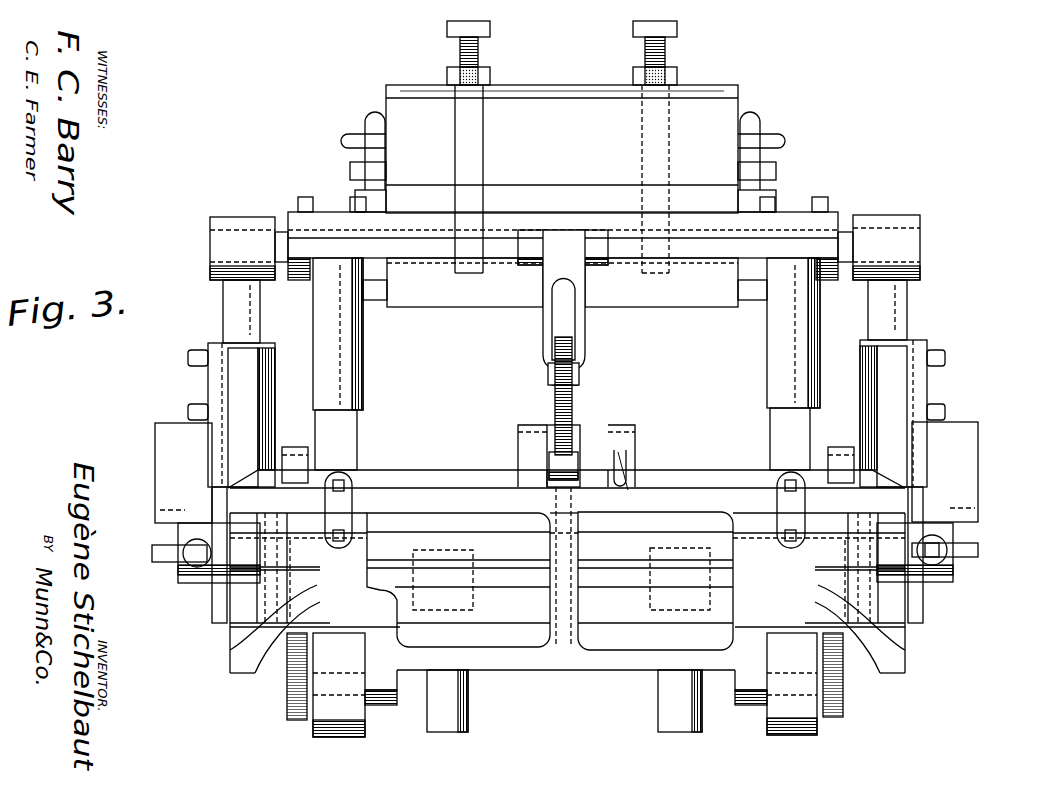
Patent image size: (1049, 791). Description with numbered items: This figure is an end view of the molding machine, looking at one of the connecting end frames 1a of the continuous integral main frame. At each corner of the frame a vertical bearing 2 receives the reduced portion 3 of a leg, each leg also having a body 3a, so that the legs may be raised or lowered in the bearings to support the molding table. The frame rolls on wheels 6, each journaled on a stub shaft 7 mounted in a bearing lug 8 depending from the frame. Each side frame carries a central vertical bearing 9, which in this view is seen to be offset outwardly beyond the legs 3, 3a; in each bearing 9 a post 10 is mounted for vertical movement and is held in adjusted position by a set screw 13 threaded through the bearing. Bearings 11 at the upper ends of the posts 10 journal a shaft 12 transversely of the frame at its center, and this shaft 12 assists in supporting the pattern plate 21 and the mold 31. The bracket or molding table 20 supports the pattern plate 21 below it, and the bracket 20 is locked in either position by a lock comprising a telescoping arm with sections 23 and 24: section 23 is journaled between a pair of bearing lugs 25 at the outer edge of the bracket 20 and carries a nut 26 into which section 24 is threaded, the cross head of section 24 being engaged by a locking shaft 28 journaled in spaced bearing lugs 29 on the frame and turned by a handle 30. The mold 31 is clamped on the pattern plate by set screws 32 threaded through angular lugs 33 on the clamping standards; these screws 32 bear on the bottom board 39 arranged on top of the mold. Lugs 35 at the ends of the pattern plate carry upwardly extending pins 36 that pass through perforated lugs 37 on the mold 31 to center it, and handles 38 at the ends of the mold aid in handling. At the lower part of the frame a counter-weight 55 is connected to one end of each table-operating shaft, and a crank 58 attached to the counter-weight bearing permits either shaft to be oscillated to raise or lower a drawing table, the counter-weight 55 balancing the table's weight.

The end frame 1a is at (480, 510).
The vertical bearing 2 is at (370, 515).
The reduced portion of leg 3 is at (362, 420).
The body of leg 3a is at (360, 352).
The wheel 6 is at (345, 728).
The stub shaft 7 is at (800, 682).
The bearing lug 8 is at (385, 705).
The central vertical bearing 9 is at (860, 345).
The post 10 is at (228, 314).
The bearing 11 is at (218, 258).
The shaft 12 is at (285, 212).
The set screw 13 is at (190, 408).
The bracket or molding table 20 is at (438, 262).
The pattern plate 21 is at (718, 228).
The arm section 23 is at (585, 322).
The arm section 24 is at (572, 410).
The bearing lug 25 is at (532, 230).
The nut 26 is at (579, 374).
The locking shaft 28 is at (578, 445).
The bearing lug 29 is at (528, 425).
The handle 30 is at (630, 470).
The mold 31 is at (718, 118).
The set screw 32 is at (488, 28).
The angular lug 33 is at (490, 72).
The lug 35 is at (355, 196).
The pin 36 is at (368, 112).
The perforated lug 37 is at (350, 170).
The handle 38 is at (348, 138).
The bottom board 39 is at (548, 84).
The counter-weight 55 is at (566, 522).
The crank 58 is at (152, 553).